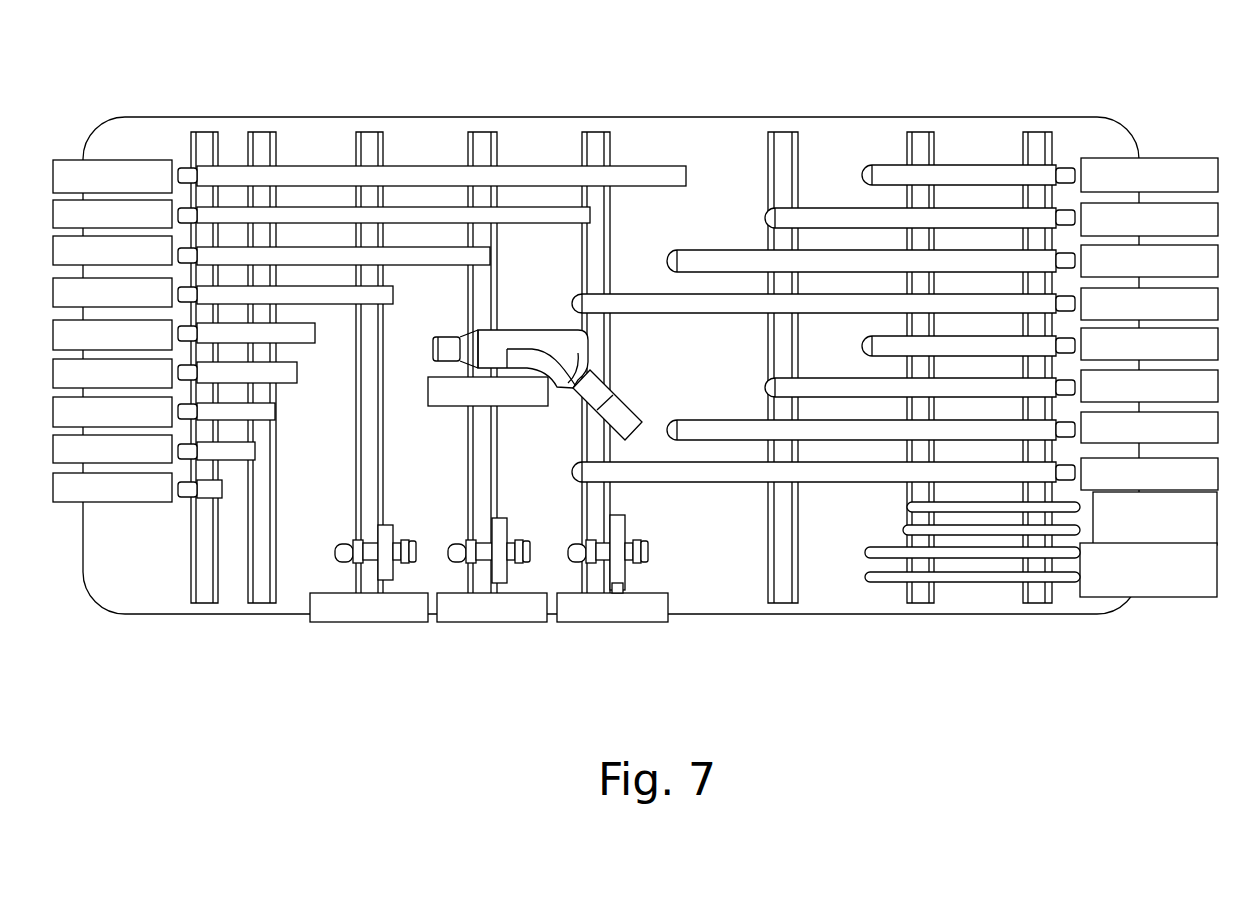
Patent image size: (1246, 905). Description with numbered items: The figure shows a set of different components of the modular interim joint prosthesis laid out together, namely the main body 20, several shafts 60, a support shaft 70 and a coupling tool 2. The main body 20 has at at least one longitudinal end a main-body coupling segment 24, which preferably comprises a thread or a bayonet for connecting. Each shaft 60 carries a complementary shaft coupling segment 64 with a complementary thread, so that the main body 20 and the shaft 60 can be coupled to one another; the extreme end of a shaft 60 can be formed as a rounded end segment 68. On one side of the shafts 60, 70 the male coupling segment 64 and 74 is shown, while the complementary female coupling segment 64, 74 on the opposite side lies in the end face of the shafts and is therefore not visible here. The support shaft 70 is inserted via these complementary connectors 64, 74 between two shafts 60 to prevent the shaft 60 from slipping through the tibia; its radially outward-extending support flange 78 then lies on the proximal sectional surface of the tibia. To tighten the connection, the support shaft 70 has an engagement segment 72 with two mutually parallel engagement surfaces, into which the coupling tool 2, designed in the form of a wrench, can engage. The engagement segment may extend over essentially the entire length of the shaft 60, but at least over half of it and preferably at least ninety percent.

The coupling tool 2 is at (988, 582).
The main body 20 is at (550, 343).
The main-body coupling segment 24 is at (436, 347).
The shaft 60 is at (312, 153).
The shaft coupling segment 64 is at (186, 167).
The rounded end segment 68 is at (862, 168).
The support shaft 70 is at (662, 577).
The engagement segment 72 is at (636, 537).
The coupling segment 74 is at (568, 556).
The support flange 78 is at (620, 585).